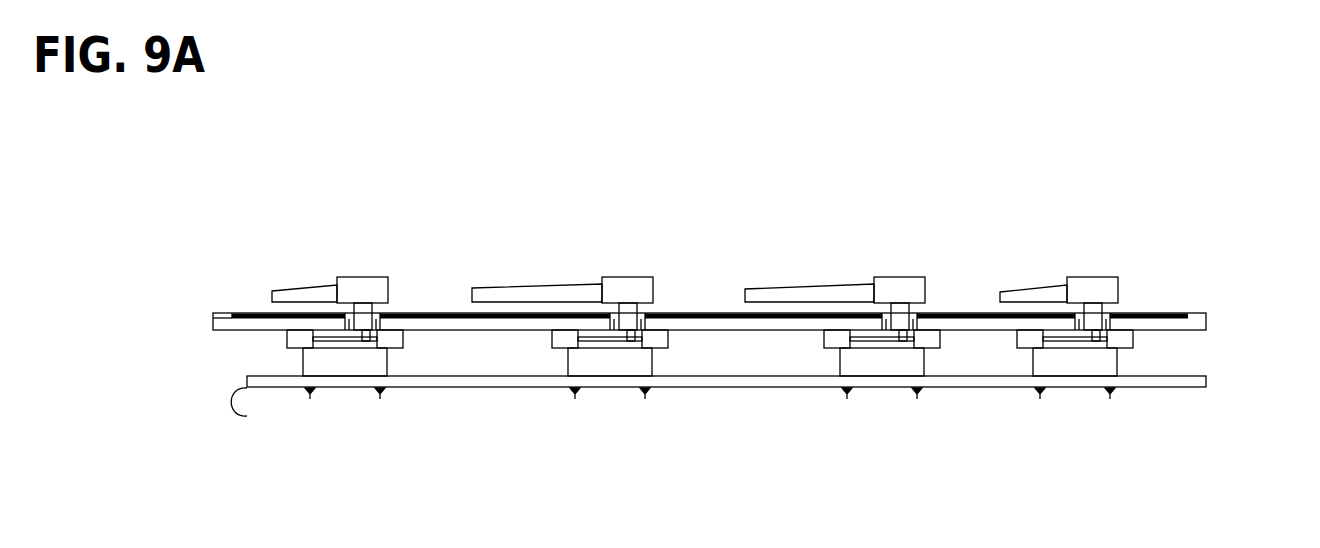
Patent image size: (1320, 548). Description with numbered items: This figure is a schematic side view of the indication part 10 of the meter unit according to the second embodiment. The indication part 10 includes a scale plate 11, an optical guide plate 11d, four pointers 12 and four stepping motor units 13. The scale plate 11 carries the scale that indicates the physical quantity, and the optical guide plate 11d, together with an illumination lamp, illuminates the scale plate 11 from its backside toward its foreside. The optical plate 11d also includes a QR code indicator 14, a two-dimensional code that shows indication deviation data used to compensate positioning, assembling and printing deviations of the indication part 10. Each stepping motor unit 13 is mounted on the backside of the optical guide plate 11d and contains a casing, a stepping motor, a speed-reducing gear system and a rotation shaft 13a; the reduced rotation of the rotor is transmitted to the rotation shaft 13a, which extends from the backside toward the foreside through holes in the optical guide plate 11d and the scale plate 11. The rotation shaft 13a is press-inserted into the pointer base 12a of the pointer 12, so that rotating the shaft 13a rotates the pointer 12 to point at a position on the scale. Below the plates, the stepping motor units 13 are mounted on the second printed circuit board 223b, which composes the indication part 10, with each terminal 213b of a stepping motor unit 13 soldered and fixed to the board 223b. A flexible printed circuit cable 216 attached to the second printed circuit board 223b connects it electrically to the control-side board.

The indication part 10 is at (1137, 267).
The scale plate 11 is at (1155, 314).
The optical guide plate 11d is at (237, 331).
The pointer 12 is at (305, 285).
The pointer base 12a is at (363, 277).
The stepping motor unit 13 is at (300, 360).
The rotation shaft 13a is at (388, 338).
The QR code indicator 14 is at (1170, 331).
The terminal 213b is at (383, 391).
The flexible printed circuit cable 216 is at (231, 403).
The second printed circuit board 223b is at (808, 388).